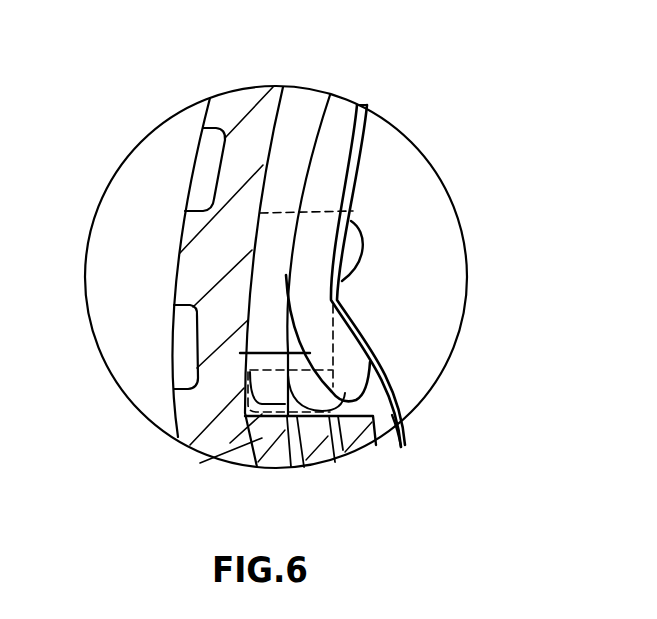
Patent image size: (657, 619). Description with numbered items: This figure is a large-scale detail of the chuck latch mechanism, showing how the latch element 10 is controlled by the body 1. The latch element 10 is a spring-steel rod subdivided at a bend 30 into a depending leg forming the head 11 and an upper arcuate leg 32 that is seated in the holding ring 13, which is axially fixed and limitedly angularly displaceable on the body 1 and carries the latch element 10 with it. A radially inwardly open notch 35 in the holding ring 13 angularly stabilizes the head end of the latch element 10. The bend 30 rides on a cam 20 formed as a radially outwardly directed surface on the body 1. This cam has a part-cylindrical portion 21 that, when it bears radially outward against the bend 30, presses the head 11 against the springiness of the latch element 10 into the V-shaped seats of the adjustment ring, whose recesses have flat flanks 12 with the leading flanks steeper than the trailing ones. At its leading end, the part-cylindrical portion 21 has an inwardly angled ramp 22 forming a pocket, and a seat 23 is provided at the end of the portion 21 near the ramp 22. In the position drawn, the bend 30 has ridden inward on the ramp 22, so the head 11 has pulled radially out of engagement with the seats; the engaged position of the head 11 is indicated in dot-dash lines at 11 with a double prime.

The body 1 is at (438, 267).
The latch element 10 is at (378, 327).
The head 11 is at (300, 376).
The flat flanks 12 is at (402, 447).
The holding ring 13 is at (306, 97).
The cam 20 is at (338, 181).
The part-cylindrical portion 21 is at (374, 139).
The inwardly angled ramp 22 is at (368, 345).
The seat 23 is at (352, 250).
The bend 30 is at (378, 376).
The upper arcuate leg 32 is at (345, 120).
The radially inwardly open notch 35 is at (302, 360).